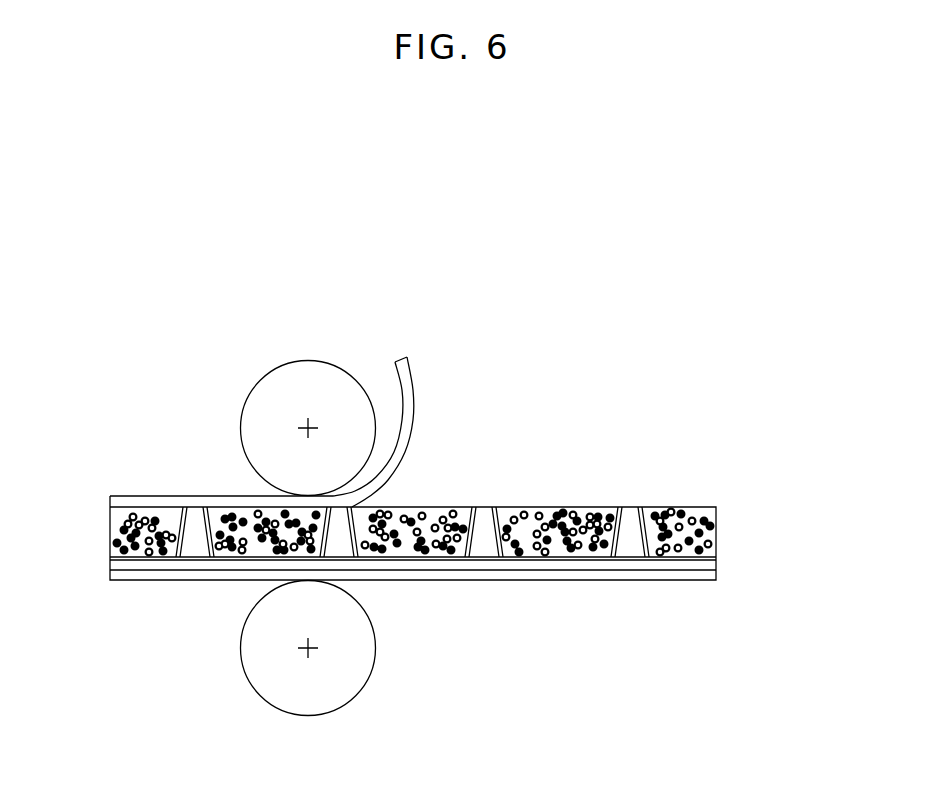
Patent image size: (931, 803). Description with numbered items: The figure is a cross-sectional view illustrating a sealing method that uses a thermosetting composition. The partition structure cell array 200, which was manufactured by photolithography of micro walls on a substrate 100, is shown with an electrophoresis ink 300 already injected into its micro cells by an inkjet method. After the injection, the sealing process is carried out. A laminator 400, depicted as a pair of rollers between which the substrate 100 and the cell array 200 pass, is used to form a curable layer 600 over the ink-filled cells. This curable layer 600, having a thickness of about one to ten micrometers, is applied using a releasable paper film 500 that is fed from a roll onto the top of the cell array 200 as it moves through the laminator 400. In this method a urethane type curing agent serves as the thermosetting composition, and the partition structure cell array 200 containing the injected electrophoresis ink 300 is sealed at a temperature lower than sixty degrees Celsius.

The substrate 100 is at (717, 571).
The partition structure cell array 200 is at (790, 505).
The electrophoresis ink 300 is at (717, 514).
The laminator 400 is at (307, 370).
The releasable paper film 500 is at (413, 393).
The curable layer 600 is at (110, 500).